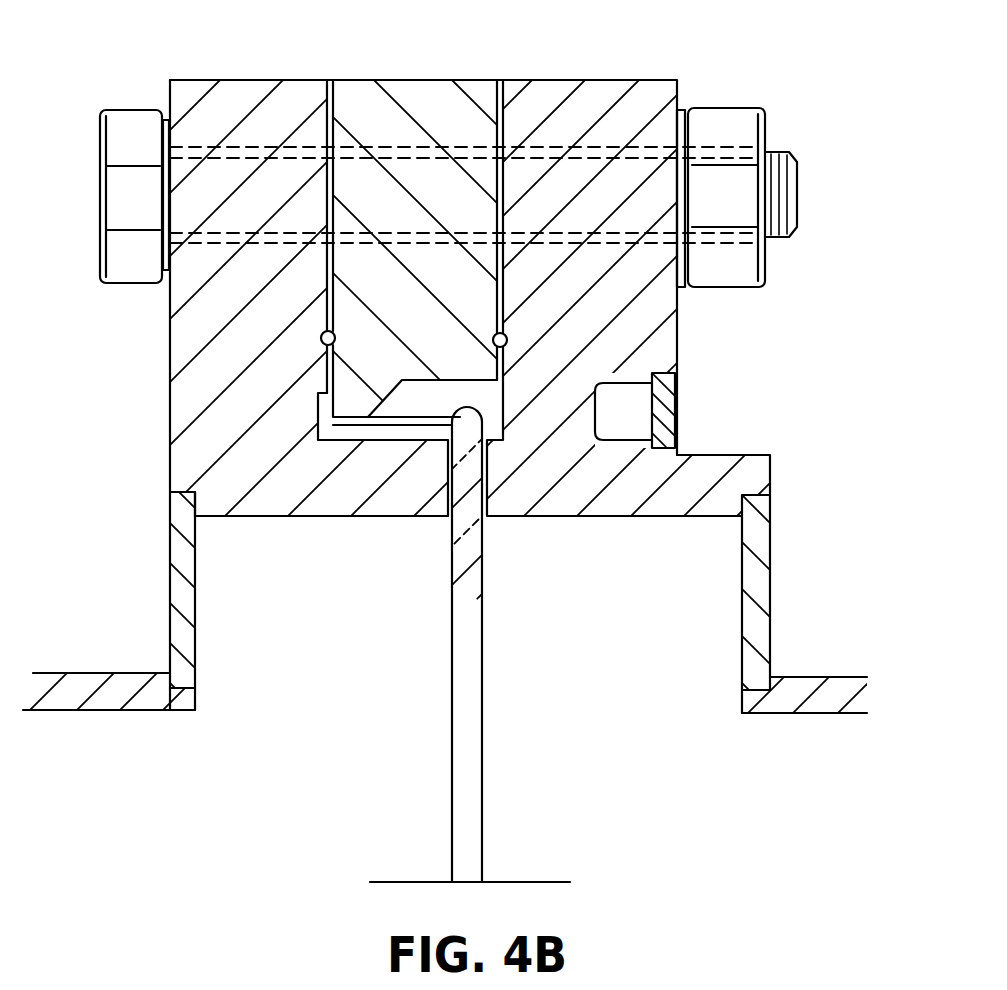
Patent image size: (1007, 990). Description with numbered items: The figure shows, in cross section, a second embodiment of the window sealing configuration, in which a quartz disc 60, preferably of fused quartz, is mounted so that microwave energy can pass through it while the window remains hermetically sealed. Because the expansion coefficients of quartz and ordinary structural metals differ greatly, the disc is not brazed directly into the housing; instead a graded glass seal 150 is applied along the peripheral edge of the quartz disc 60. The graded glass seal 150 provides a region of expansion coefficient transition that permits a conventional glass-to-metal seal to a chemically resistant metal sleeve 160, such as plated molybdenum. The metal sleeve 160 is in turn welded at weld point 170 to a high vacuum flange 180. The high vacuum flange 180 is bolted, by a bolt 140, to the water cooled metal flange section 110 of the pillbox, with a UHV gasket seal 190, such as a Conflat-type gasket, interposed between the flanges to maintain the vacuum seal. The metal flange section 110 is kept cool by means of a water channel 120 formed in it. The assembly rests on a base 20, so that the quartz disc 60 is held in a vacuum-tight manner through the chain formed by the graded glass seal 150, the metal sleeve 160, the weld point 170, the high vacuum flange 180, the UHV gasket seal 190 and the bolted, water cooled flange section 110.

The base plate 20 is at (807, 677).
The quartz disc 60 is at (472, 773).
The metal flange section 110 is at (747, 455).
The water channel 120 is at (635, 408).
The bolt 140 is at (797, 203).
The graded glass seal 150 is at (488, 442).
The metal sleeve 160 is at (403, 438).
The weld point 170 is at (325, 420).
The high vacuum flange 180 is at (387, 80).
The UHV gasket seal 190 is at (321, 338).